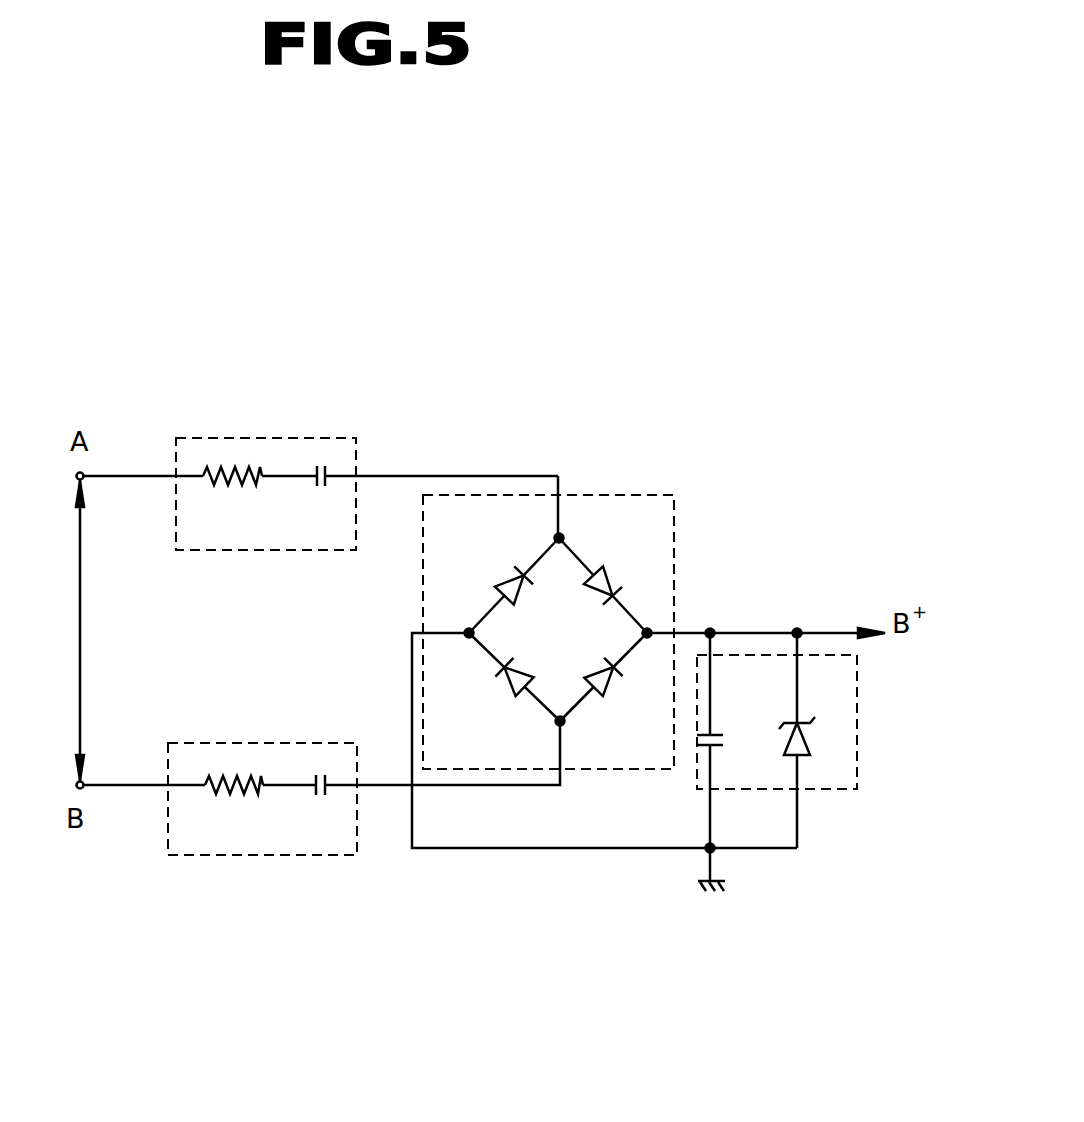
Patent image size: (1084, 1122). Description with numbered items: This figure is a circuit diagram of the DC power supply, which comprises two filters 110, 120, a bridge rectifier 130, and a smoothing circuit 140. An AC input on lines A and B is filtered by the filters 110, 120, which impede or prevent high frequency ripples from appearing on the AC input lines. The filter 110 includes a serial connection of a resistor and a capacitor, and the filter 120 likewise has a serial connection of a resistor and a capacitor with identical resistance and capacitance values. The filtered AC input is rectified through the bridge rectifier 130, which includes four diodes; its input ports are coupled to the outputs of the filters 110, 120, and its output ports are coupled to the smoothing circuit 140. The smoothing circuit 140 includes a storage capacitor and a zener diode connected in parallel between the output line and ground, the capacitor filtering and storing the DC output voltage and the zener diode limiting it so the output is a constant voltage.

The filter 110 is at (335, 438).
The filter 120 is at (313, 858).
The bridge rectifier 130 is at (629, 495).
The smoothing circuit 140 is at (852, 792).